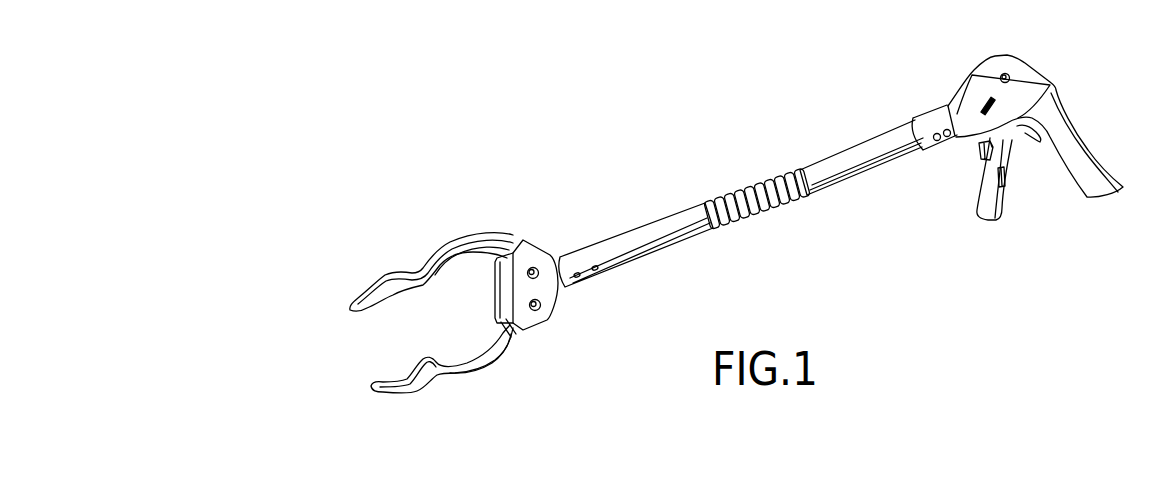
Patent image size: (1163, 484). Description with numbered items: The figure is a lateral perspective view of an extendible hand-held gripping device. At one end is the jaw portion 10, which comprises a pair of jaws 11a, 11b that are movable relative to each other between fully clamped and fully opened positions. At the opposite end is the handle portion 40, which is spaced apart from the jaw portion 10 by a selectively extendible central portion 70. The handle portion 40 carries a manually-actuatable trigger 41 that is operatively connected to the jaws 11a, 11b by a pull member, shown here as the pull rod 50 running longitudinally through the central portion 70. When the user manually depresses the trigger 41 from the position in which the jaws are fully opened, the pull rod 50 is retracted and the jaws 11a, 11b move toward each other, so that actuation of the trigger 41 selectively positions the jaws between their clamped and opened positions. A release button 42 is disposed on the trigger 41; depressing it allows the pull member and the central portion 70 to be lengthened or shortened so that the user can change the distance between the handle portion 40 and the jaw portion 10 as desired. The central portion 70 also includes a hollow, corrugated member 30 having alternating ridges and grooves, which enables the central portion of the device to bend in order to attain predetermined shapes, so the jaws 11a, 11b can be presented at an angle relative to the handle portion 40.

The jaw portion 10 is at (337, 402).
The jaw 11a is at (467, 372).
The jaw 11b is at (453, 234).
The corrugated member 30 is at (736, 219).
The handle portion 40 is at (1090, 99).
The trigger 41 is at (997, 216).
The release button 42 is at (980, 153).
The pull rod 50 is at (853, 147).
The central portion 70 is at (756, 136).